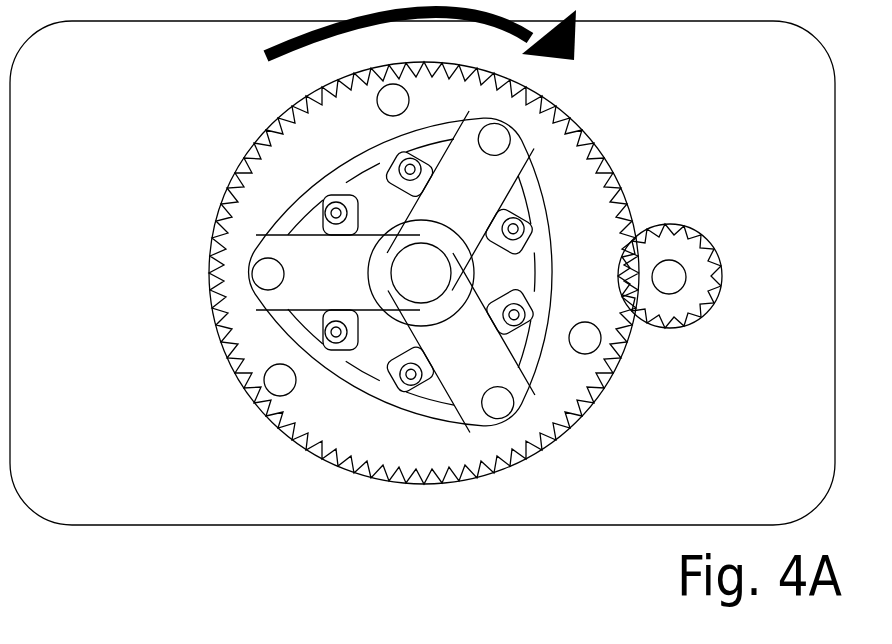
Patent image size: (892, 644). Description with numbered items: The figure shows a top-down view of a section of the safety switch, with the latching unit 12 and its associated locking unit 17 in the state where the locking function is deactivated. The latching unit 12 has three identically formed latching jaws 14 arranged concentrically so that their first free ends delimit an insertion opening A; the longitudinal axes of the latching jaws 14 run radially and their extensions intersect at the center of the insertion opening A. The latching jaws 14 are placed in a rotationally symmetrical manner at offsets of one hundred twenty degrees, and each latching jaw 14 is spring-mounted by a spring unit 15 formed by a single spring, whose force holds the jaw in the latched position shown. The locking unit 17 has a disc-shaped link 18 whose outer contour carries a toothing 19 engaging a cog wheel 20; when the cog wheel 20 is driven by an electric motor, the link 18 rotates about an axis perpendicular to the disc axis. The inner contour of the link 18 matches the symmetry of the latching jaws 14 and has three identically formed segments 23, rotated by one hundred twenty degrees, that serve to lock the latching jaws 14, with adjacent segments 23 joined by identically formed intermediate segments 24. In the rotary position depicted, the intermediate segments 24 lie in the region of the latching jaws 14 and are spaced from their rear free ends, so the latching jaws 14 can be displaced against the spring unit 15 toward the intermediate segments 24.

The latching unit 12 is at (365, 372).
The latching jaw 14 is at (308, 284).
The spring unit 15 is at (338, 200).
The locking unit 17 is at (180, 180).
The link 18 is at (615, 175).
The toothing 19 is at (597, 393).
The cog wheel 20 is at (716, 246).
The segment 23 is at (268, 140).
The intermediate segment 24 is at (557, 118).
The insertion opening A is at (414, 284).